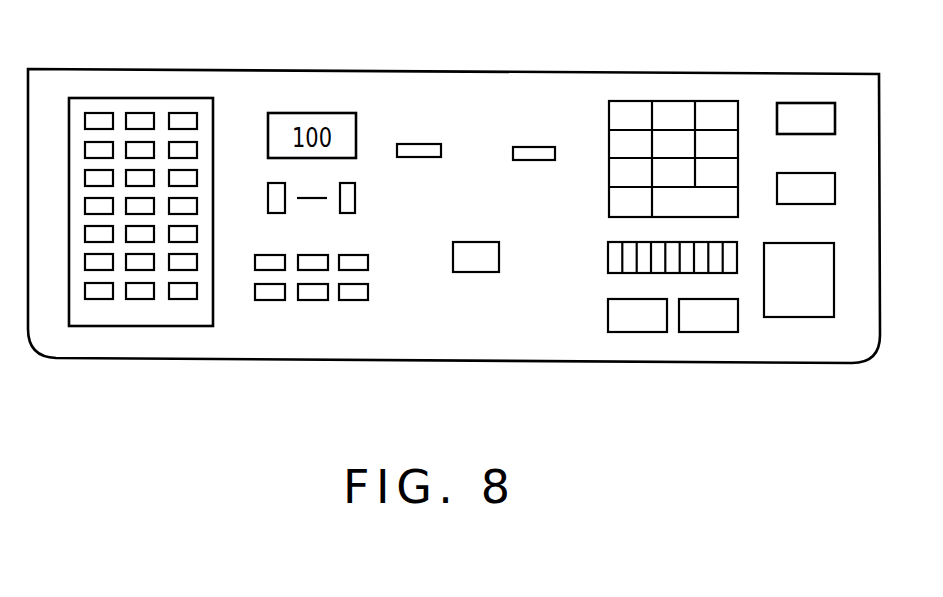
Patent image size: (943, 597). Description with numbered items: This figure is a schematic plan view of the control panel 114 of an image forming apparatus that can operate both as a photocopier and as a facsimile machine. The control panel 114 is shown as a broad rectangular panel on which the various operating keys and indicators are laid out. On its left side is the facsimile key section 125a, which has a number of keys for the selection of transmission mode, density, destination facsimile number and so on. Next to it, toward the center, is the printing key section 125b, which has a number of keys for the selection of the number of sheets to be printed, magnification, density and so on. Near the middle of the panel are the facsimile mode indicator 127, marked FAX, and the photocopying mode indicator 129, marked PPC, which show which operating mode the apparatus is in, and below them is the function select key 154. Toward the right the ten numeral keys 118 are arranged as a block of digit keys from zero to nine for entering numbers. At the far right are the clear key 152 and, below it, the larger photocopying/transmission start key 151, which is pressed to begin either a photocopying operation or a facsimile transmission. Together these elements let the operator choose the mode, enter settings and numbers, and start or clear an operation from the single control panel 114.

The control panel 114 is at (498, 70).
The ten numeral keys 118 is at (674, 99).
The facsimile key section 125a is at (139, 341).
The printing key section 125b is at (315, 311).
The facsimile mode indicator 127 is at (417, 144).
The photocopying mode indicator 129 is at (536, 147).
The photocopying/transmission start key 151 is at (803, 302).
The clear key 152 is at (800, 107).
The function select key 154 is at (475, 273).